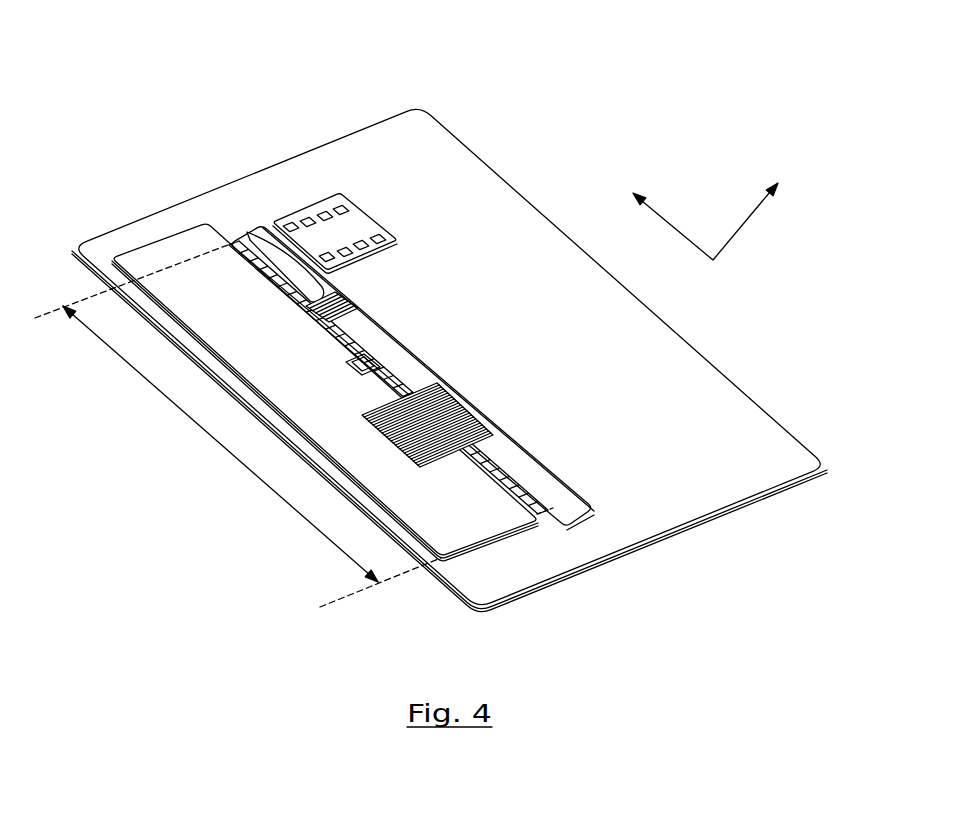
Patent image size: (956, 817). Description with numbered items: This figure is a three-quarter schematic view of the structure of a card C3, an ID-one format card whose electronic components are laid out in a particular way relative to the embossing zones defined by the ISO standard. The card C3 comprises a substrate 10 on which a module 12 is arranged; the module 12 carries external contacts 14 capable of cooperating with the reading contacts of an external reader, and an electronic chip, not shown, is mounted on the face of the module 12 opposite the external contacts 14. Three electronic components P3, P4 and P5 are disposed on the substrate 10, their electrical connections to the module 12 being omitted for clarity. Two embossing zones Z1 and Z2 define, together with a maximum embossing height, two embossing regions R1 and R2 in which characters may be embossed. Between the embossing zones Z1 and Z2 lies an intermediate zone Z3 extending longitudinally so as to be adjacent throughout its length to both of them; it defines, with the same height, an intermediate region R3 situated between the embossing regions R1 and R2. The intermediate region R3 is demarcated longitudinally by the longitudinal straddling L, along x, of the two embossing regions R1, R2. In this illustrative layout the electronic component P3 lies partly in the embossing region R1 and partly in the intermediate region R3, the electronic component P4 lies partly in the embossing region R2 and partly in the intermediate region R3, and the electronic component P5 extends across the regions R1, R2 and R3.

The card C3 is at (465, 95).
The substrate 10 is at (465, 142).
The module 12 is at (298, 210).
The external contacts 14 is at (340, 190).
The electronic component P3 is at (247, 231).
The electronic component P4 is at (346, 362).
The electronic component P5 is at (395, 440).
The embossing region R1 is at (516, 445).
The embossing region R2 is at (481, 553).
The intermediate region R3 is at (570, 498).
The embossing zone Z1 is at (538, 466).
The embossing zone Z2 is at (470, 538).
The intermediate zone Z3 is at (546, 506).
The longitudinal straddling L is at (238, 425).